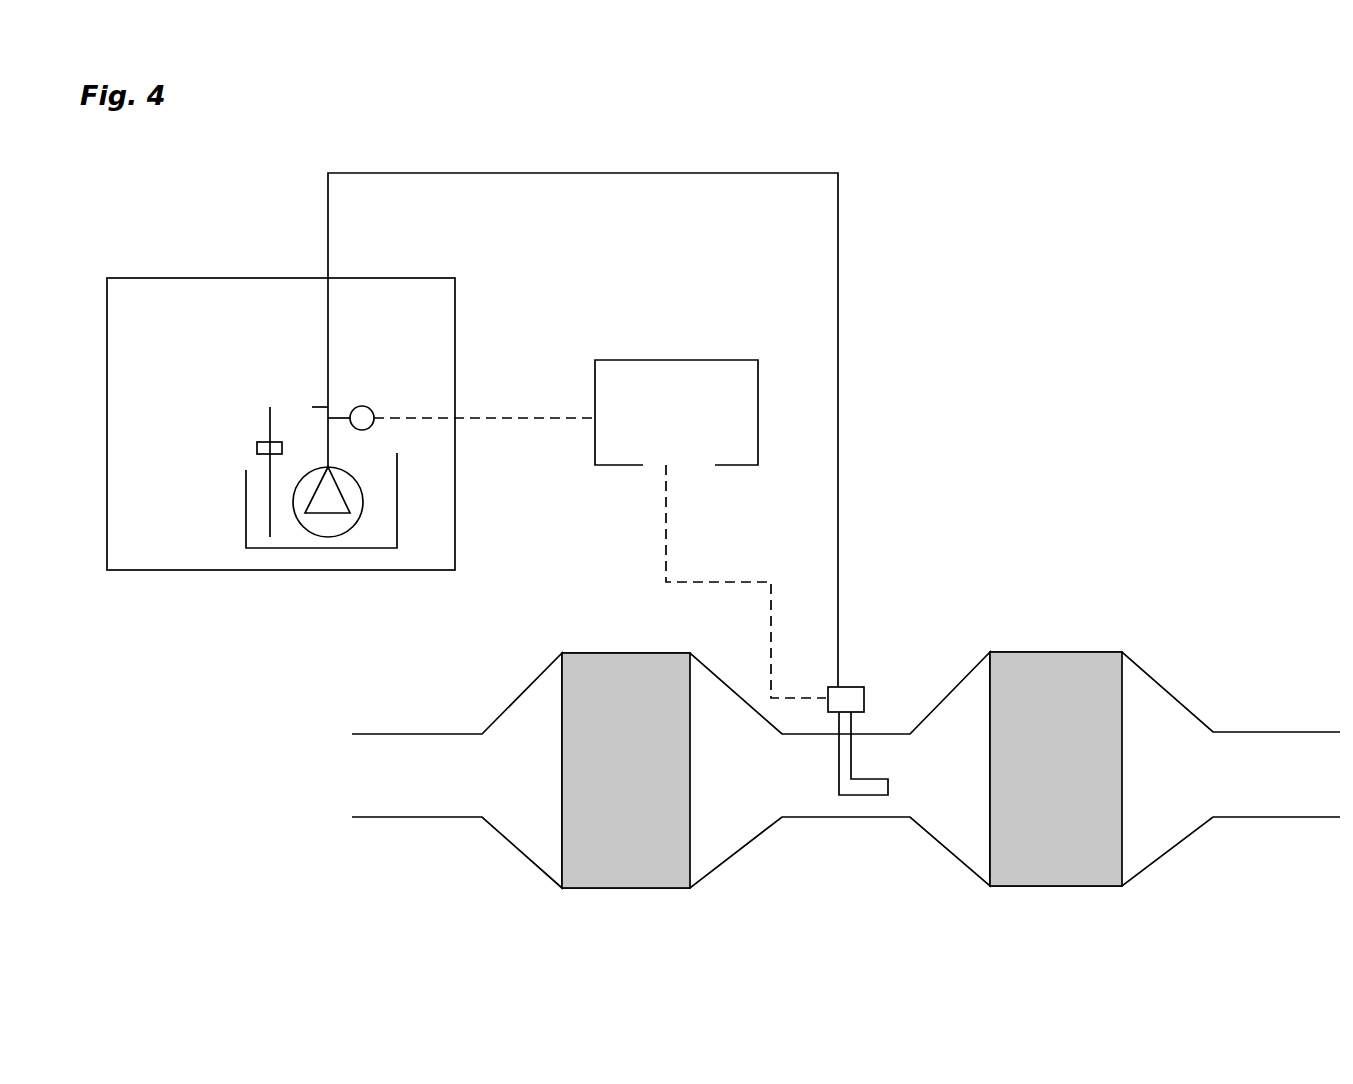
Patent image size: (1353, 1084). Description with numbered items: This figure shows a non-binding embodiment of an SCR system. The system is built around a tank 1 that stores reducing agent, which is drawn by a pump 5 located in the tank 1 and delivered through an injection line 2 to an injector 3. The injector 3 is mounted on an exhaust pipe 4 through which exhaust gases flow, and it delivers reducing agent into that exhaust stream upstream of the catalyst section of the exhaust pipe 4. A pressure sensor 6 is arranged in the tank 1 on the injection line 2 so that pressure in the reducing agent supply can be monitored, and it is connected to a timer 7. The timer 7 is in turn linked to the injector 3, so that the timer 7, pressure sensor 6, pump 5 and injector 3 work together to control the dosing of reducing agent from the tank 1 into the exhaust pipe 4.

The tank 1 is at (456, 488).
The injection line 2 is at (582, 172).
The injector 3 is at (865, 702).
The exhaust pipe 4 is at (1038, 651).
The pump 5 is at (353, 523).
The pressure sensor 6 is at (362, 406).
The timer 7 is at (710, 529).